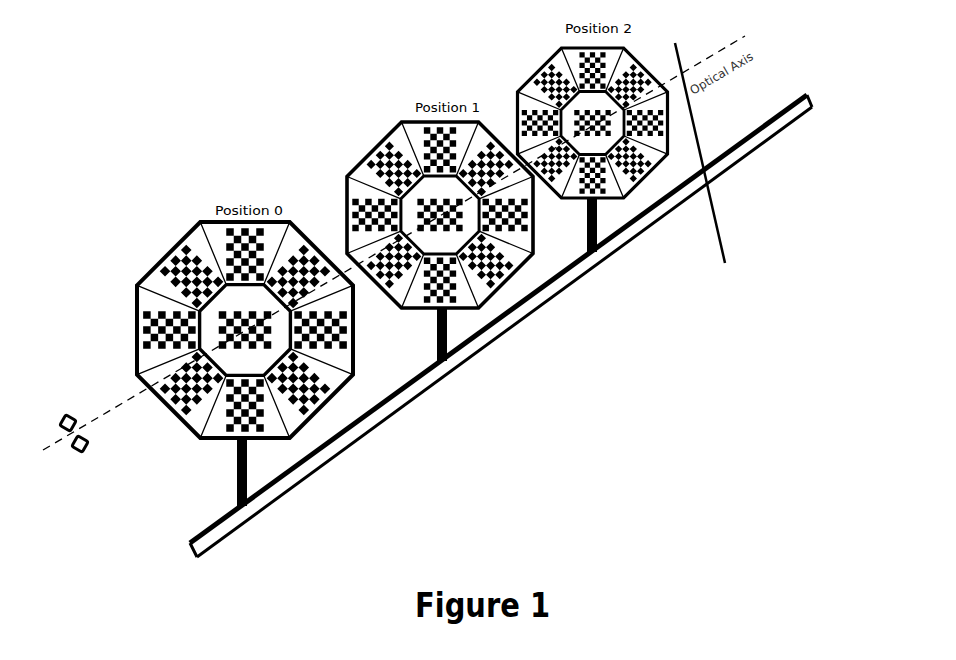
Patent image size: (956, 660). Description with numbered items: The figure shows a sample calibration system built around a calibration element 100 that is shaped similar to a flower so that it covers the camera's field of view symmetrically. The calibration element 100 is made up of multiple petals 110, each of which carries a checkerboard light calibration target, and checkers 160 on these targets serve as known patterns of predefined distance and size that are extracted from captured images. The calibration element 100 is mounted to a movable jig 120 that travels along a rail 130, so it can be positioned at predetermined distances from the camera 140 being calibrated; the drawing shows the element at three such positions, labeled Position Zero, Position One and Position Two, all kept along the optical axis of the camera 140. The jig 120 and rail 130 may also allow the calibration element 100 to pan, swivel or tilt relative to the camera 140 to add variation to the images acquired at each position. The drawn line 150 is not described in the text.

The calibration element 100 is at (193, 205).
The petals 110 is at (308, 223).
The movable jig 120 is at (248, 448).
The rail 130 is at (413, 363).
The camera 140 is at (62, 362).
The reference line 150 is at (706, 173).
The checkers 160 is at (527, 257).